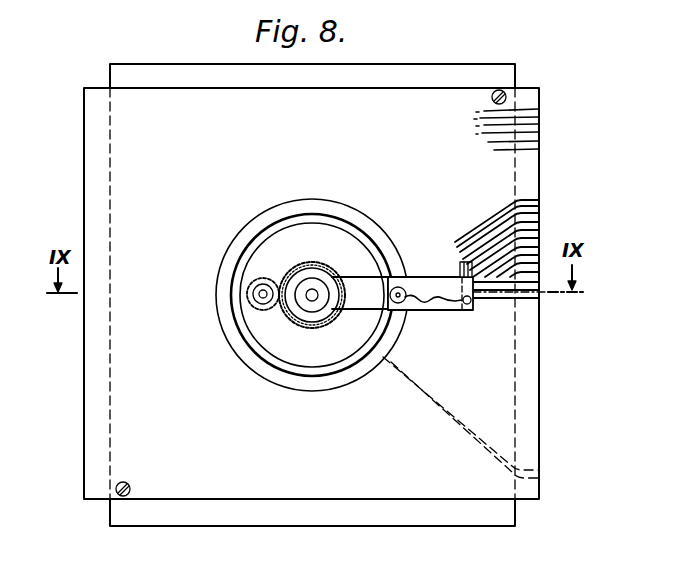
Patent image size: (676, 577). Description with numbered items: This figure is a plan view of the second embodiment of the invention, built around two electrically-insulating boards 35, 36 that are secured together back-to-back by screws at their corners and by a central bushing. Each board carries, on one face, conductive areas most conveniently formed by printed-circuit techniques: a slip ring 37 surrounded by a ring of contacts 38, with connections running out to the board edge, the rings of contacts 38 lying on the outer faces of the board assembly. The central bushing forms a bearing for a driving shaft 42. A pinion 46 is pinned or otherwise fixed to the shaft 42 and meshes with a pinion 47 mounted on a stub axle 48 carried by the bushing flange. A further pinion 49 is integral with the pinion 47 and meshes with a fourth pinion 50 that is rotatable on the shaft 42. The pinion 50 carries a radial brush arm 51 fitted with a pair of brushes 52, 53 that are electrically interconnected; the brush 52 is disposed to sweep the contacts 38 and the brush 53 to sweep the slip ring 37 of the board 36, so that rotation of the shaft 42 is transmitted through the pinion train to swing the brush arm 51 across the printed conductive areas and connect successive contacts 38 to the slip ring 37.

The electrically-insulating board 35 is at (476, 517).
The electrically-insulating board 36 is at (172, 487).
The slip ring 37 is at (366, 222).
The ring of contacts 38 is at (455, 243).
The driving shaft 42 is at (310, 300).
The pinion 46 is at (310, 262).
The pinion 47 is at (260, 302).
The stub axle 48 is at (255, 297).
The pinion 49 is at (265, 305).
The pinion 50 is at (330, 322).
The radial brush arm 51 is at (362, 278).
The brush 52 is at (460, 268).
The brush 53 is at (400, 305).